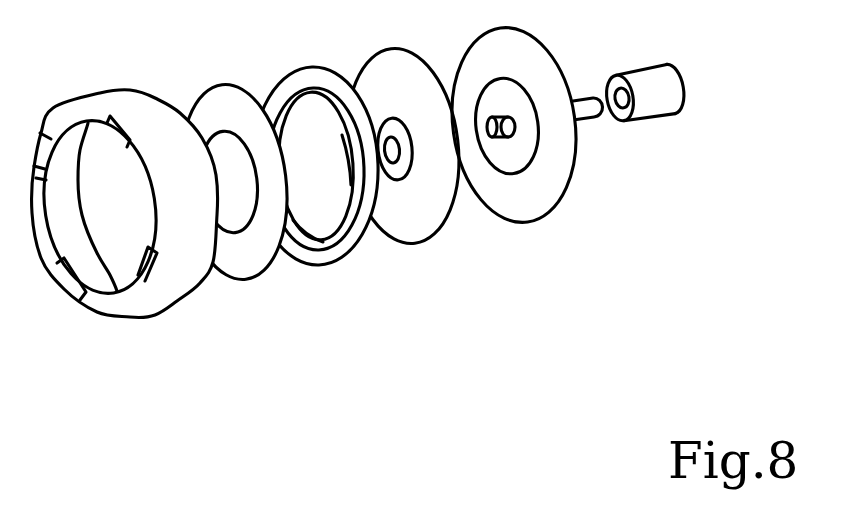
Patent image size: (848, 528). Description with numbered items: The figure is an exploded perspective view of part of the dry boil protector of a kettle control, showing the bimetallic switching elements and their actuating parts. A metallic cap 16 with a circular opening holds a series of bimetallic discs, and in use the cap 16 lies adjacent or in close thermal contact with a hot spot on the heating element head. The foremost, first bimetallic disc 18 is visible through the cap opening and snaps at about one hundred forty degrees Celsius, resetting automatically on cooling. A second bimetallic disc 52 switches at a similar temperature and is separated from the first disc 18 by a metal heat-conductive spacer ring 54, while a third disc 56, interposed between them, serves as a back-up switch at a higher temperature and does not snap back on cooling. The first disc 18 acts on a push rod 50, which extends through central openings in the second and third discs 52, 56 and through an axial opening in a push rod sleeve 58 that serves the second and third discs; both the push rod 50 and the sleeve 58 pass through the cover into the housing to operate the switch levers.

The metallic cap 16 is at (158, 278).
The first bimetallic disc 18 is at (260, 245).
The push rod 50 is at (585, 115).
The second bimetallic disc 52 is at (411, 215).
The spacer ring 54 is at (350, 252).
The third bimetallic disc 56 is at (508, 193).
The push rod sleeve 58 is at (653, 105).